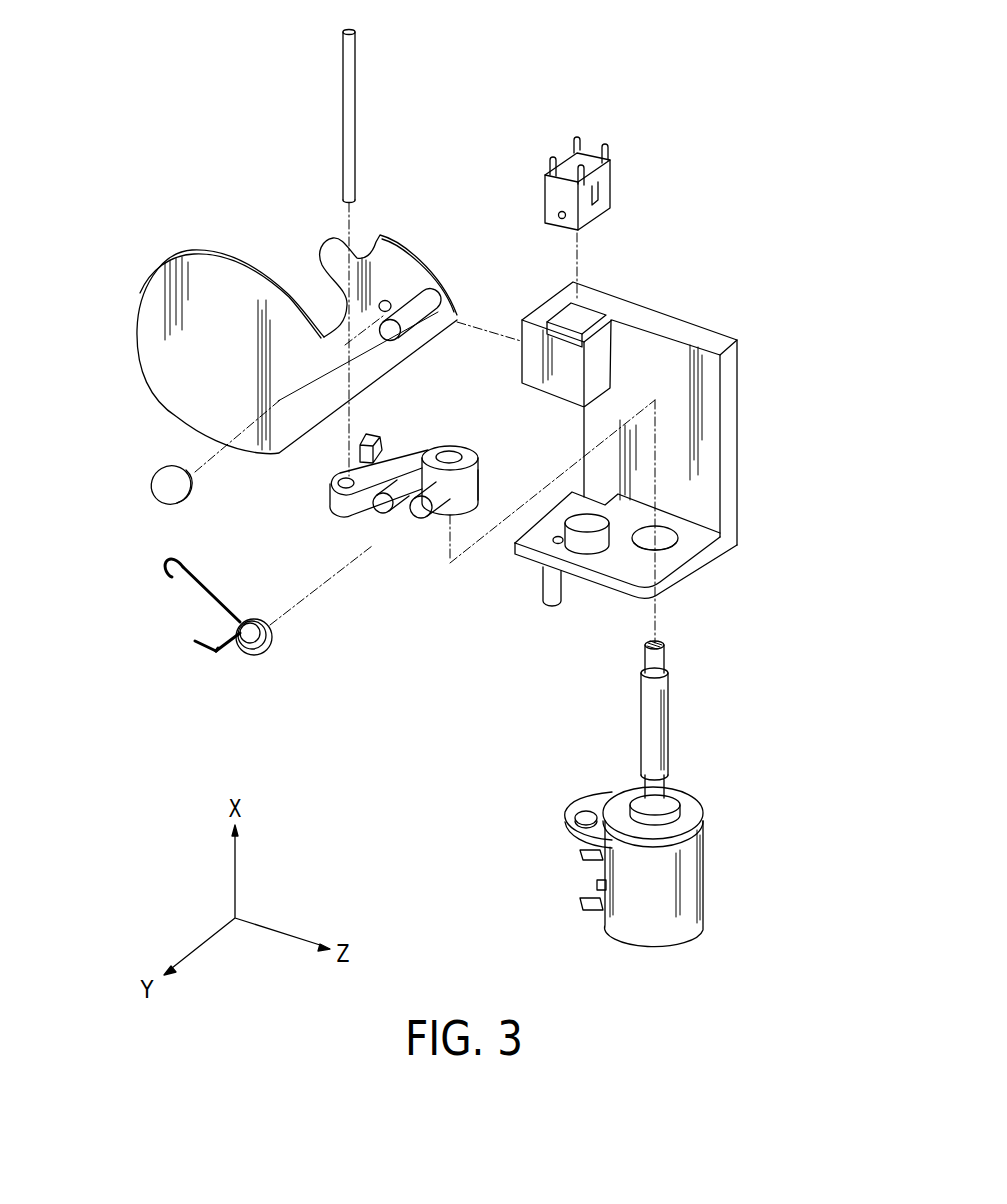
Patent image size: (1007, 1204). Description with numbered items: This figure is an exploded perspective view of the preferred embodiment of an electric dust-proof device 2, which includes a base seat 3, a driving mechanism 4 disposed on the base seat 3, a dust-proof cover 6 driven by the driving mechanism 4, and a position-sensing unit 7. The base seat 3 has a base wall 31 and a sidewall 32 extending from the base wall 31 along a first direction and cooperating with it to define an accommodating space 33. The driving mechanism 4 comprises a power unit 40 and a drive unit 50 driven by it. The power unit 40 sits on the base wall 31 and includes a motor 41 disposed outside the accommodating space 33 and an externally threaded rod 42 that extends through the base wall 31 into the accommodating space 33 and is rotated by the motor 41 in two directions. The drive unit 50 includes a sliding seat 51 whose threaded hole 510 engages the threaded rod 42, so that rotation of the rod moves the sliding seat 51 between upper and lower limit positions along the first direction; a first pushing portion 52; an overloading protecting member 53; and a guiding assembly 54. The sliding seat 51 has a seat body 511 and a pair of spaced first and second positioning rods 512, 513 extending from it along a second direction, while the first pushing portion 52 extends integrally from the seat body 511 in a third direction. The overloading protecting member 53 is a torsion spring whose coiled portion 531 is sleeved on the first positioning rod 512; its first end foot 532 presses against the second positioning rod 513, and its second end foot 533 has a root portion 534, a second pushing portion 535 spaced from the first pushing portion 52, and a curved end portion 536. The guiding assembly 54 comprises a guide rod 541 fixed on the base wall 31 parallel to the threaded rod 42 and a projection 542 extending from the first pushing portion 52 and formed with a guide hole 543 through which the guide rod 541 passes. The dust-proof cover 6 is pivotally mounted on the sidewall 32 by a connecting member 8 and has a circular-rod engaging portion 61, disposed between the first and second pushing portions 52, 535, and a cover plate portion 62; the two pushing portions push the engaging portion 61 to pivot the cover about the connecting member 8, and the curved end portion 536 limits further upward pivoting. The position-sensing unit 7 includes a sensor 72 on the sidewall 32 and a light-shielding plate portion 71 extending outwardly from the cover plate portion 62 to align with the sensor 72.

The electric dust-proof device 2 is at (665, 382).
The base seat 3 is at (665, 417).
The base wall 31 is at (698, 566).
The sidewall 32 is at (739, 405).
The accommodating space 33 is at (705, 478).
The driving mechanism 4 is at (688, 794).
The power unit 40 is at (688, 867).
The motor 41 is at (705, 862).
The externally threaded rod 42 is at (670, 717).
The drive unit 50 is at (405, 481).
The sliding seat 51 is at (428, 495).
The threaded hole 510 is at (447, 450).
The seat body 511 is at (478, 494).
The first positioning rod 512 is at (413, 516).
The second positioning rod 513 is at (377, 504).
The first pushing portion 52 is at (399, 458).
The overloading protecting member 53 is at (188, 638).
The coiled portion 531 is at (239, 656).
The first end foot 532 is at (197, 660).
The second end foot 533 is at (213, 596).
The root portion 534 is at (203, 647).
The second pushing portion 535 is at (195, 588).
The curved end portion 536 is at (163, 563).
The guiding assembly 54 is at (291, 116).
The guide rod 541 is at (333, 82).
The projection 542 is at (337, 481).
The guide hole 543 is at (335, 483).
The dust-proof cover 6 is at (264, 299).
The engaging portion 61 is at (412, 300).
The cover plate portion 62 is at (152, 368).
The position-sensing unit 7 is at (577, 143).
The light-shielding plate portion 71 is at (380, 235).
The sensor 72 is at (594, 147).
The connecting member 8 is at (151, 486).